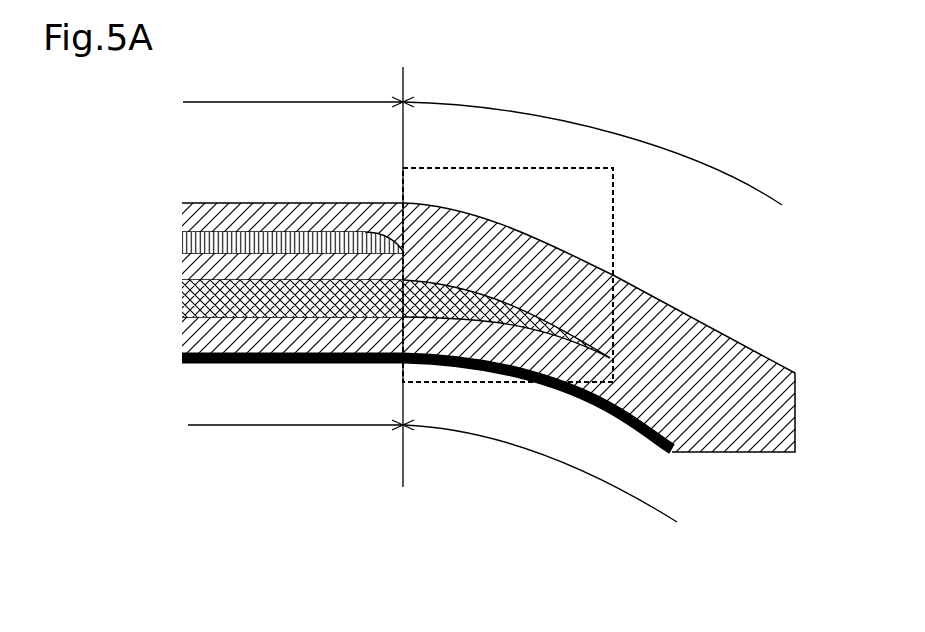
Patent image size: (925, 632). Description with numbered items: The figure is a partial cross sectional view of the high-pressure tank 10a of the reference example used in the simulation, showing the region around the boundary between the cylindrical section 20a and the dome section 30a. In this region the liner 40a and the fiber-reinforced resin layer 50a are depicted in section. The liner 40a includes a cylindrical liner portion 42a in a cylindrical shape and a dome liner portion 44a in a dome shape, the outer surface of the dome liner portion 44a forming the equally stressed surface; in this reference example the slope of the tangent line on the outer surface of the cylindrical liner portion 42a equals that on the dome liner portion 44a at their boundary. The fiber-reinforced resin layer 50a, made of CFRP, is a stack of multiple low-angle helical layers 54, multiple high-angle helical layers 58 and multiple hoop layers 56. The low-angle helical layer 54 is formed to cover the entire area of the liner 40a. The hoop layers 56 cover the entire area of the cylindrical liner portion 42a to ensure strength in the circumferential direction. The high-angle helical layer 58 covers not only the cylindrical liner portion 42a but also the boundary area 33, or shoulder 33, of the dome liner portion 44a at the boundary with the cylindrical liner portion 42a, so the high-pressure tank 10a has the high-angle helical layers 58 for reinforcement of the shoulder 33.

The high-pressure tank 10a is at (757, 123).
The cylindrical section 20a is at (293, 75).
The dome section 30a is at (592, 141).
The boundary area (shoulder) 33 is at (613, 198).
The liner 40a is at (657, 576).
The cylindrical liner portion 42a is at (287, 461).
The dome liner portion 44a is at (555, 499).
The fiber-reinforced resin layer 50a is at (335, 276).
The low-angle helical layer 54 is at (186, 208).
The hoop layer 56 is at (186, 236).
The high-angle helical layer 58 is at (367, 319).